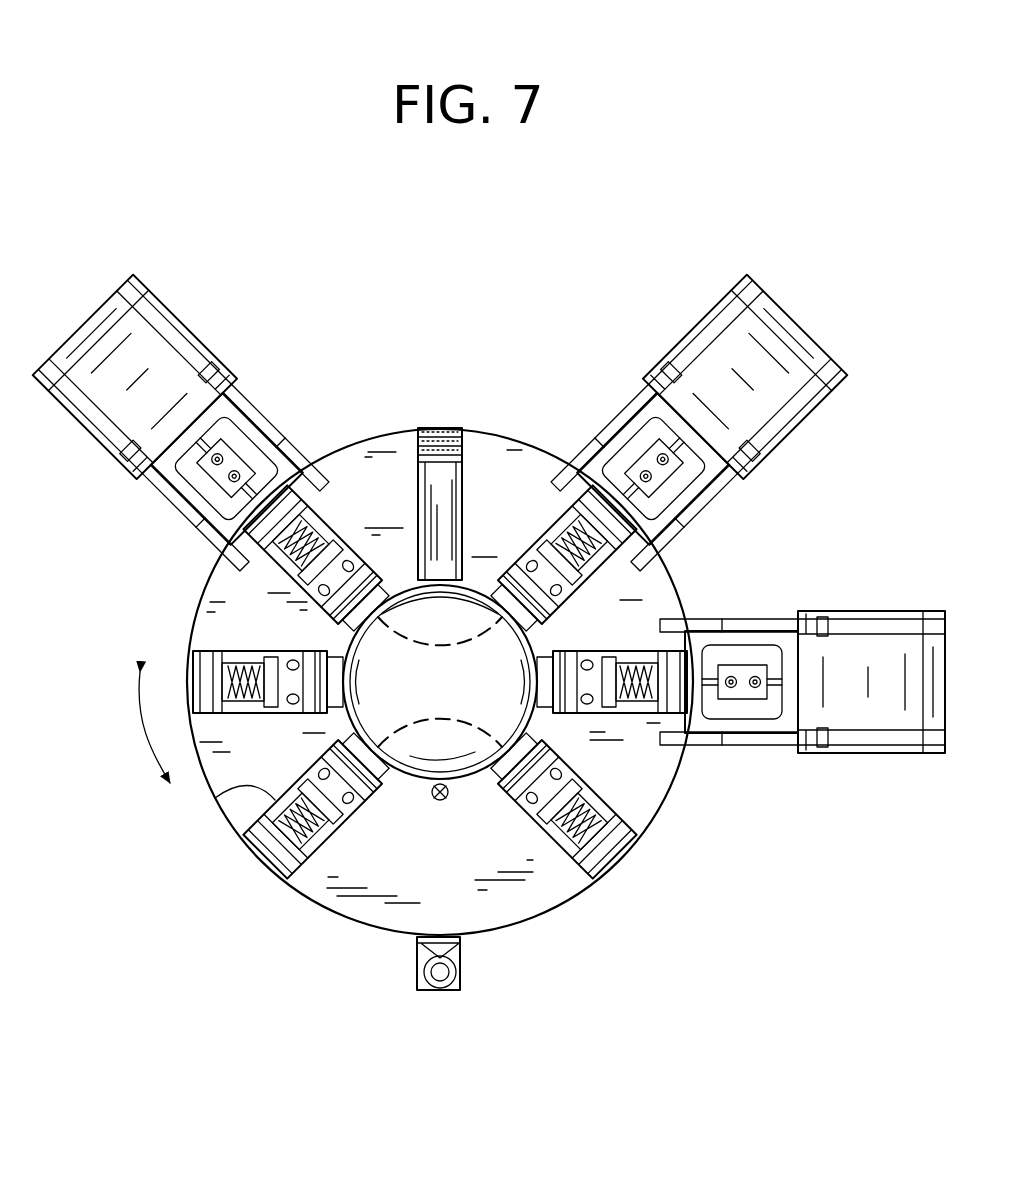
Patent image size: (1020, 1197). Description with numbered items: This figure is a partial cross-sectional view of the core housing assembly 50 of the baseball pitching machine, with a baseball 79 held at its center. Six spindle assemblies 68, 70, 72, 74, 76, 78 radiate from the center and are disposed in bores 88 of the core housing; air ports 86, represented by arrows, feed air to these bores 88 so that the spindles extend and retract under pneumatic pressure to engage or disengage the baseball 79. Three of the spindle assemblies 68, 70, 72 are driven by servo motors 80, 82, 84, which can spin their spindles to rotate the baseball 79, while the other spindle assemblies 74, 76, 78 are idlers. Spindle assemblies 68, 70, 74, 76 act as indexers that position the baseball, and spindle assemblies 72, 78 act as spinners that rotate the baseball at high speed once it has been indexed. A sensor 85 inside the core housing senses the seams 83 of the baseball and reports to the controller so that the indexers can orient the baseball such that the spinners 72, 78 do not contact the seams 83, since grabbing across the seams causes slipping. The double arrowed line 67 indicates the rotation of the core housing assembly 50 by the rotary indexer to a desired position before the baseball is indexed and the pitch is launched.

The core housing assembly 50 is at (548, 934).
The double arrowed line 67 is at (143, 738).
The spindle assembly 68 is at (344, 527).
The spindle assembly 70 is at (522, 546).
The spindle assembly 72 is at (613, 636).
The spindle assembly 74 is at (515, 807).
The spindle assembly 76 is at (367, 803).
The spindle assembly 78 is at (280, 718).
The baseball 79 is at (427, 687).
The servo motor 80 is at (160, 368).
The servo motor 82 is at (745, 345).
The seams 83 is at (408, 640).
The servo motor 84 is at (874, 752).
The sensor 85 is at (441, 801).
The air ports 86 is at (558, 515).
The bores 88 is at (300, 530).